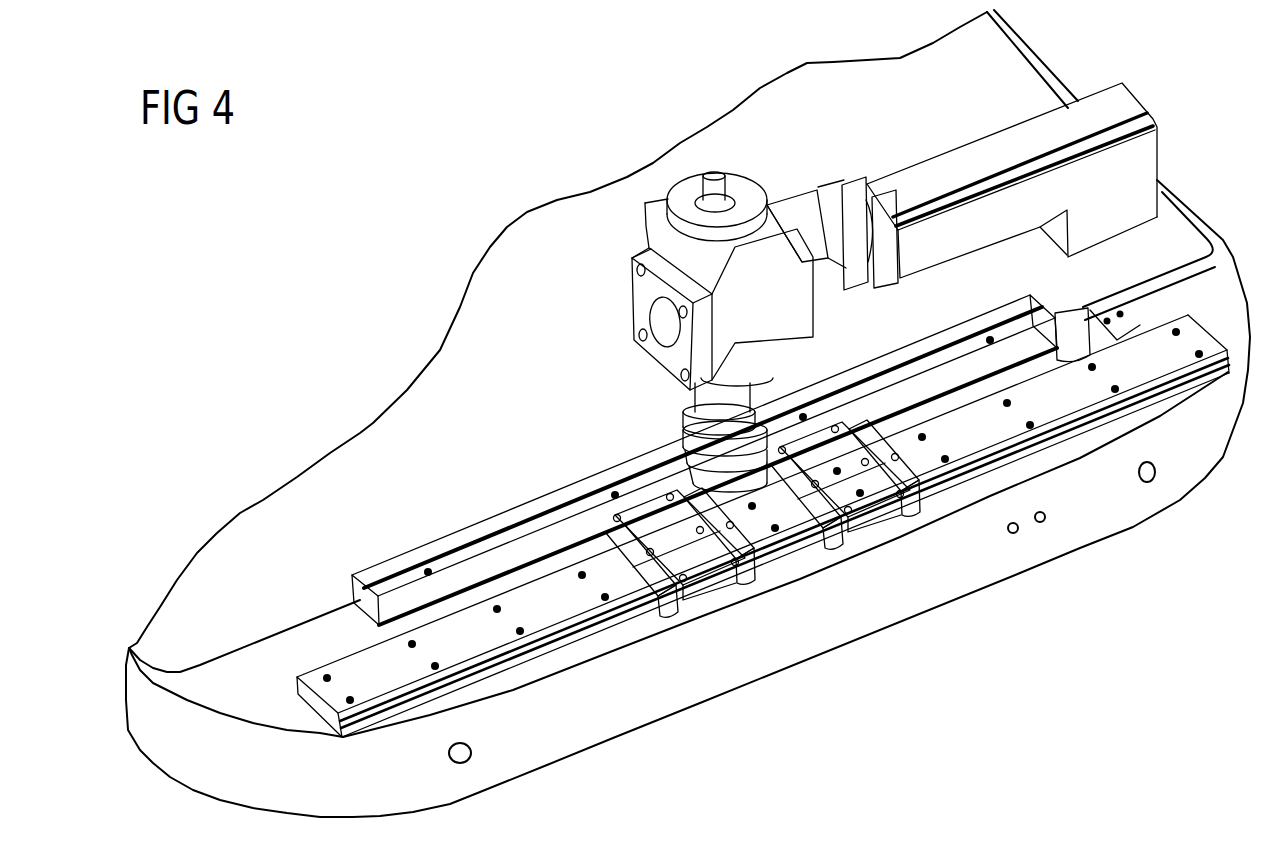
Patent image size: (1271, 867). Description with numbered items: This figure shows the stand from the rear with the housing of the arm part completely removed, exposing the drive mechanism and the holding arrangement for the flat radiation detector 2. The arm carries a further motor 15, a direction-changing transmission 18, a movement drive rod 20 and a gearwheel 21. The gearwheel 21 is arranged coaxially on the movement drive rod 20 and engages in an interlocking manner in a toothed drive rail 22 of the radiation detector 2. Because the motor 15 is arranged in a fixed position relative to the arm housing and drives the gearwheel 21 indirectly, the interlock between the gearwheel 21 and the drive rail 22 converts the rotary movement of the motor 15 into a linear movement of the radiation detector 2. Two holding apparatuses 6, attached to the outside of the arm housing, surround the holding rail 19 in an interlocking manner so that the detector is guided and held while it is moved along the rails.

The flat radiation detector 2 is at (457, 397).
The holding apparatus 6 is at (688, 553).
The further motor 15 is at (968, 163).
The direction-changing transmission 18 is at (772, 277).
The holding rail 19 is at (480, 633).
The movement drive rod 20 is at (712, 400).
The gearwheel 21 is at (710, 498).
The toothed drive rail 22 is at (487, 547).